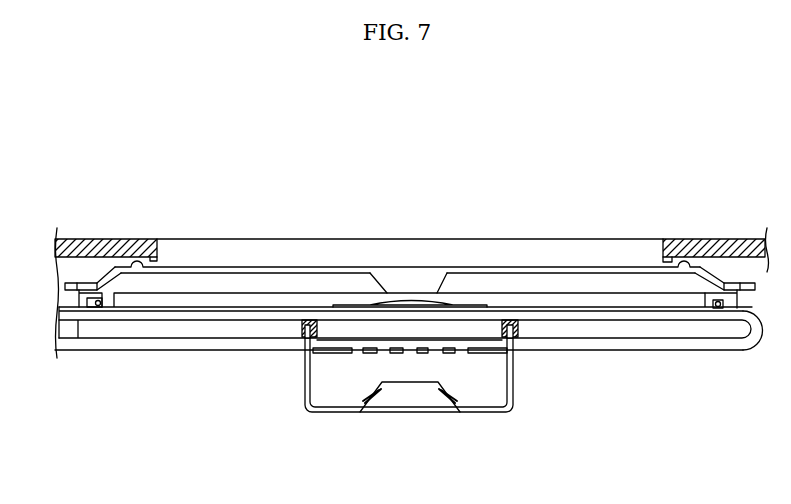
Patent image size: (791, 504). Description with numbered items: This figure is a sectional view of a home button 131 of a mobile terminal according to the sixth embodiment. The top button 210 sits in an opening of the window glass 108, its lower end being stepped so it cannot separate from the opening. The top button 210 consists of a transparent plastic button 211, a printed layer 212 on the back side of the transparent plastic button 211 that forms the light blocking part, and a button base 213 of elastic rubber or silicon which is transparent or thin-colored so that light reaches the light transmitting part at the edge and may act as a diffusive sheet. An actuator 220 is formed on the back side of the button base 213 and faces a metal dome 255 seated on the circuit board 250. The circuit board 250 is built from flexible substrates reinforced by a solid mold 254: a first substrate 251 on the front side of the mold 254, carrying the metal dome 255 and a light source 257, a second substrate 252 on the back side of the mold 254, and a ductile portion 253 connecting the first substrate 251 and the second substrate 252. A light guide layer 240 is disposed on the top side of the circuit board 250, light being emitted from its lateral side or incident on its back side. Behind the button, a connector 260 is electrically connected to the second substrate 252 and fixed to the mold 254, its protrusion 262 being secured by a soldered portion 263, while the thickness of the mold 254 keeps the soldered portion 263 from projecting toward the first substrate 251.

The window glass 108 is at (723, 248).
The home button 131 is at (540, 198).
The top button 210 is at (237, 162).
The transparent plastic button 211 is at (233, 248).
The printed layer 212 is at (283, 267).
The button base 213 is at (327, 272).
The actuator 220 is at (413, 285).
The light guide layer 240 is at (567, 300).
The circuit board 250 is at (602, 400).
The first substrate 251 is at (715, 316).
The second substrate 252 is at (670, 343).
The ductile portion 253 is at (757, 333).
The mold 254 is at (620, 333).
The metal dome 255 is at (408, 308).
The light source 257 is at (97, 308).
The connector 260 is at (337, 392).
The protrusion 262 is at (307, 327).
The soldered portion 263 is at (299, 332).